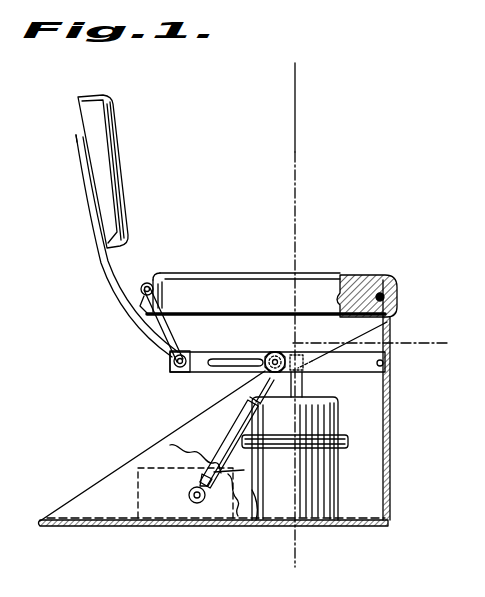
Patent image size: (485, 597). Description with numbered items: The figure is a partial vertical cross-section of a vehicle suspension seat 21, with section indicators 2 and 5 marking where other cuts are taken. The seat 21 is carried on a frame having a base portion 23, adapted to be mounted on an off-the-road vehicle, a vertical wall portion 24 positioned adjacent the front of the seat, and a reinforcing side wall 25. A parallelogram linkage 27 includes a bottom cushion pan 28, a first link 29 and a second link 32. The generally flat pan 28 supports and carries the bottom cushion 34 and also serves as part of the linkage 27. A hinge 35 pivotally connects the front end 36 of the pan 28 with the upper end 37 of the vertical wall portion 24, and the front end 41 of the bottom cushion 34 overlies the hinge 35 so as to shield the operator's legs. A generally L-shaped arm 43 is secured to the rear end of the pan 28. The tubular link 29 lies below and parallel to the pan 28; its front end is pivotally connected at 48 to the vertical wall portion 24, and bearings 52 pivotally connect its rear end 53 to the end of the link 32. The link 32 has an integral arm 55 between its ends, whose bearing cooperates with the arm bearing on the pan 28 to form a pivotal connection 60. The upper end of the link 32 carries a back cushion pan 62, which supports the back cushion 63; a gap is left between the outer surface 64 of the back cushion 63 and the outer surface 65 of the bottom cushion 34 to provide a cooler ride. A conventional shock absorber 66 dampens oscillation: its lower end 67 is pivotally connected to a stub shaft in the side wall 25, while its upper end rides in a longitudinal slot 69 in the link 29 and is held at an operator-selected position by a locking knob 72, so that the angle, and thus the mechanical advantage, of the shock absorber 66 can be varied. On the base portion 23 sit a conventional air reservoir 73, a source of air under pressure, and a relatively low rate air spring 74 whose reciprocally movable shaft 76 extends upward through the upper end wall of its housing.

The section line 2- 2 is at (276, 77).
The section line 5- 5 is at (340, 328).
The suspension seat 21 is at (322, 249).
The base portion 23 is at (92, 525).
The vertical wall portion 24 is at (388, 452).
The side wall 25 is at (100, 492).
The parallelogram linkage 27 is at (122, 339).
The bottom cushion pan 28 is at (213, 308).
The link 29 is at (240, 338).
The link 32 is at (100, 278).
The bottom cushion 34 is at (278, 306).
The hinge 35 is at (392, 283).
The front end 36 is at (378, 294).
The upper end 37 is at (387, 322).
The front end 41 is at (397, 298).
The L-shaped arm 43 is at (145, 308).
The pivotal connection 48 is at (387, 367).
The bearings 52 is at (166, 366).
The rear end 53 is at (190, 366).
The integral arm 55 is at (132, 285).
The pivotal connection 60 is at (151, 284).
The back cushion pan 62 is at (80, 110).
The back cushion 63 is at (103, 134).
The outer surface 64 is at (122, 178).
The outer surface 65 is at (325, 273).
The shock absorber 66 is at (220, 447).
The lower end 67 is at (190, 491).
The longitudinal slot 69 is at (207, 367).
The locking knob 72 is at (282, 339).
The air reservoir 73 is at (253, 525).
The air spring 74 is at (330, 428).
The shaft 76 is at (303, 385).